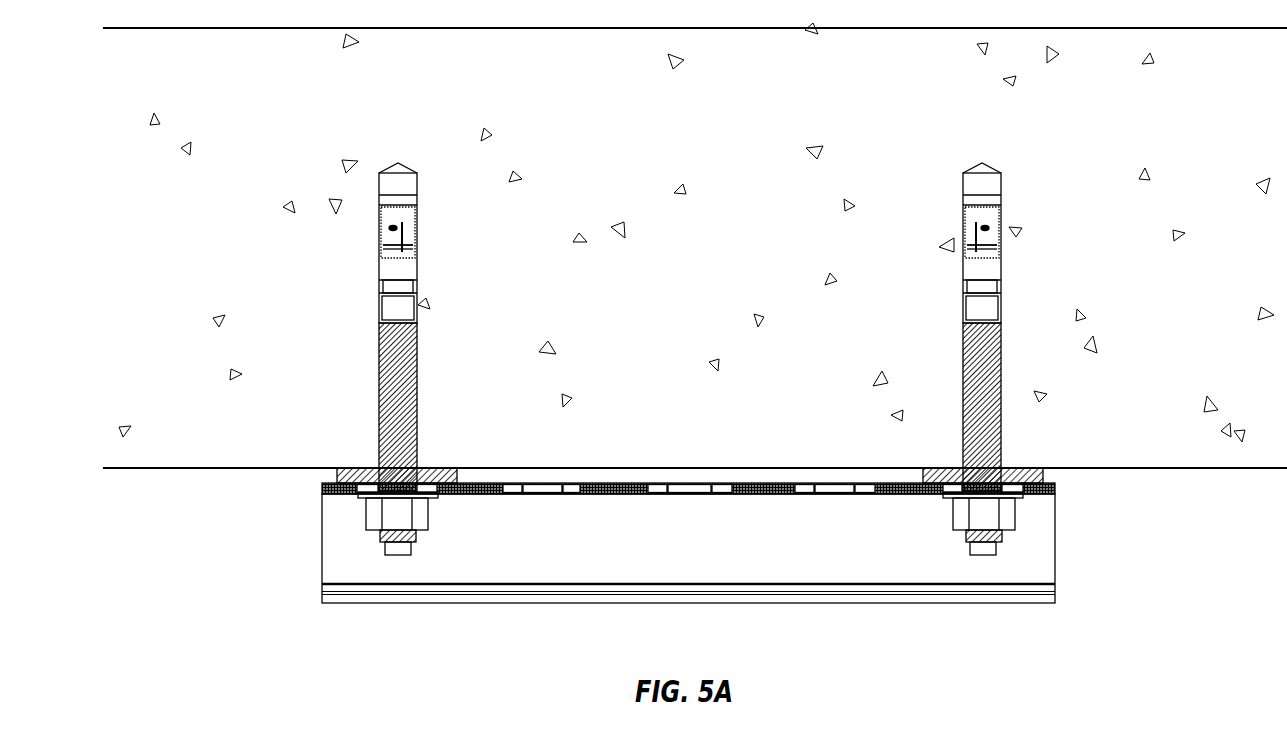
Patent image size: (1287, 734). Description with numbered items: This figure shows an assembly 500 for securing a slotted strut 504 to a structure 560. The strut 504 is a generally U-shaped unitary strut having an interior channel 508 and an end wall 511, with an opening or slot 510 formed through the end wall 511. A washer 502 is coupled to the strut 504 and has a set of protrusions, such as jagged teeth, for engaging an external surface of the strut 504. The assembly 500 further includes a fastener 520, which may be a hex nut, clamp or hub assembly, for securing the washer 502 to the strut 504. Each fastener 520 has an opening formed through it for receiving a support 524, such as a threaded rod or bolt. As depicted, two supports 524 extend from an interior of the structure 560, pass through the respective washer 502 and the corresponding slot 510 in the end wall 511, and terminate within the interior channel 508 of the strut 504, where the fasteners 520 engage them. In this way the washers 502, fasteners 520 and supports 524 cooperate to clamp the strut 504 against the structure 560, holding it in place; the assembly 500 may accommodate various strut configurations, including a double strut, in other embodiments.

The assembly 500 is at (138, 488).
The washer 502 is at (338, 477).
The strut 504 is at (1056, 553).
The interior channel 508 is at (452, 565).
The slot 510 is at (323, 493).
The end wall 511 is at (762, 486).
The fastener 520 is at (357, 519).
The support 524 is at (413, 335).
The structure 560 is at (621, 171).